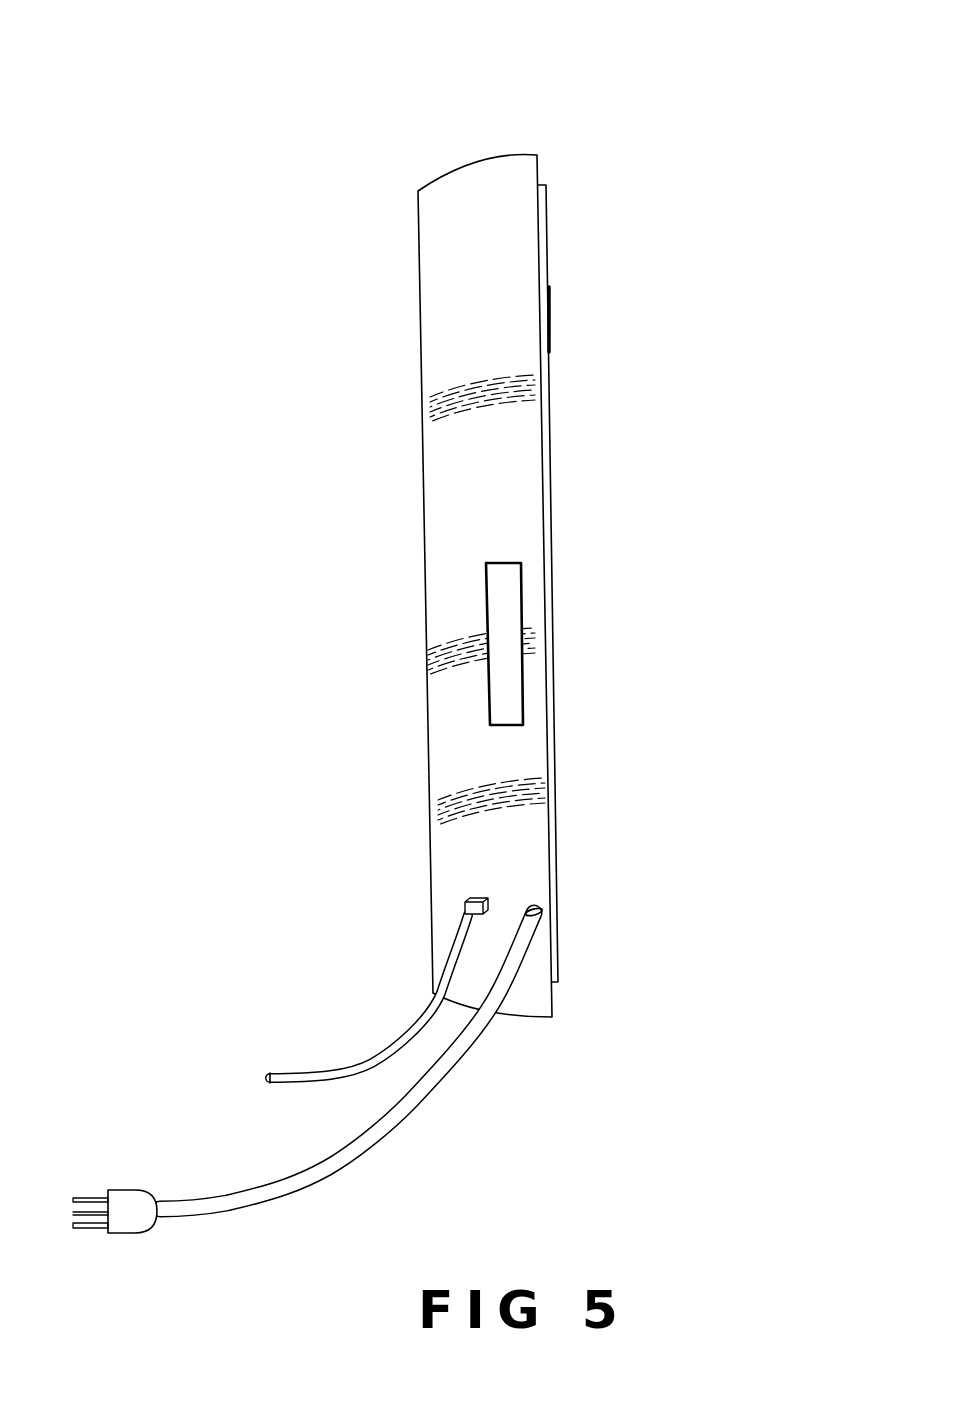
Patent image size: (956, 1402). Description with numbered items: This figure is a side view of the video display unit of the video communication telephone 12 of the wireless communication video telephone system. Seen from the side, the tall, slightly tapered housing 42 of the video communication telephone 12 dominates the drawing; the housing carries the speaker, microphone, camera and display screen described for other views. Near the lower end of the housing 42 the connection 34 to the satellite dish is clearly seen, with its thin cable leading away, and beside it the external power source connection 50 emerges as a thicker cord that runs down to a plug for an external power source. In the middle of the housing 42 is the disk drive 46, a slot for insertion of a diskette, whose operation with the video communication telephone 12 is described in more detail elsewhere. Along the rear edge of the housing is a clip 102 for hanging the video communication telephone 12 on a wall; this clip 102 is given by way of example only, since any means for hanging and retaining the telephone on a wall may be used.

The video communication telephone 12 is at (322, 104).
The clip 102 is at (564, 293).
The housing 42 is at (505, 315).
The disk drive 46 is at (503, 585).
The connection to the satellite dish 34 is at (473, 897).
The external power source connection 50 is at (410, 1100).